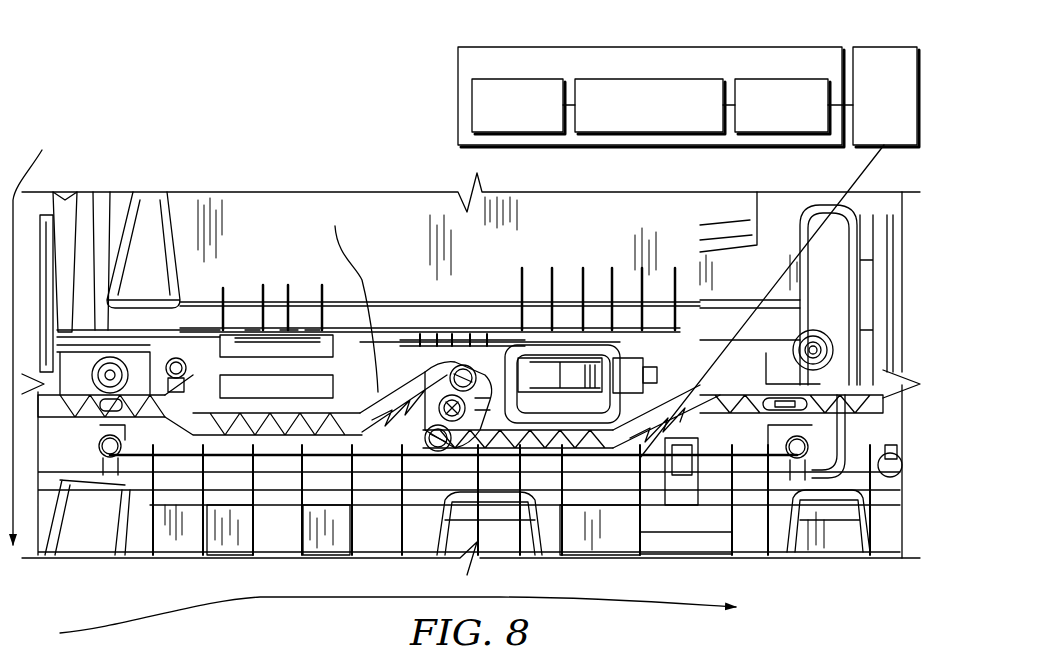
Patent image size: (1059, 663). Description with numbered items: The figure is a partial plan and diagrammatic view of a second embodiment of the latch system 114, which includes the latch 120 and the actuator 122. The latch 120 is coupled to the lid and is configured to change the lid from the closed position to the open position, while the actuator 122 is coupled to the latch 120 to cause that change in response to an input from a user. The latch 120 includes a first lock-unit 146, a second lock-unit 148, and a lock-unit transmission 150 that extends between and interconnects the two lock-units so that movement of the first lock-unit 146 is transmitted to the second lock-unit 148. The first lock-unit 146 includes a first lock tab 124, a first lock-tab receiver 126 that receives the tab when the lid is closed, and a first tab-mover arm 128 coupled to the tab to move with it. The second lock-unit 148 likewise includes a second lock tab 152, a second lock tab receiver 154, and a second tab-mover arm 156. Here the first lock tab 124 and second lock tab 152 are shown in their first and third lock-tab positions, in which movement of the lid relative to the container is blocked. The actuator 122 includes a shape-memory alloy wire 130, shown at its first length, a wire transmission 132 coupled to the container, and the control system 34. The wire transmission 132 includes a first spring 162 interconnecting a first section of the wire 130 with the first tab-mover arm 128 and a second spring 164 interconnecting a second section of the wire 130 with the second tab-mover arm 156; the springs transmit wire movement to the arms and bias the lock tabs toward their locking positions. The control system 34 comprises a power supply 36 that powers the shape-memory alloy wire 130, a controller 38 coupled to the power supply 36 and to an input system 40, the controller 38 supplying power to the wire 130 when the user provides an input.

The control system 34 is at (655, 100).
The power supply 36 is at (778, 79).
The controller 38 is at (630, 132).
The input system 40 is at (520, 79).
The latch system 114 is at (212, 116).
The latch 120 is at (552, 195).
The actuator 122 is at (797, 22).
The first lock tab 124 is at (133, 425).
The first lock-tab receiver 126 is at (84, 330).
The first tab-mover arm 128 is at (335, 226).
The shape-memory alloy wire 130 is at (888, 47).
The wire transmission 132 is at (68, 612).
The first lock-unit 146 is at (307, 380).
The second lock-unit 148 is at (580, 412).
The lock-unit transmission 150 is at (480, 365).
The second lock tab 152 is at (882, 475).
The second lock tab receiver 154 is at (852, 420).
The second tab-mover arm 156 is at (707, 395).
The first spring 162 is at (108, 455).
The second spring 164 is at (790, 458).